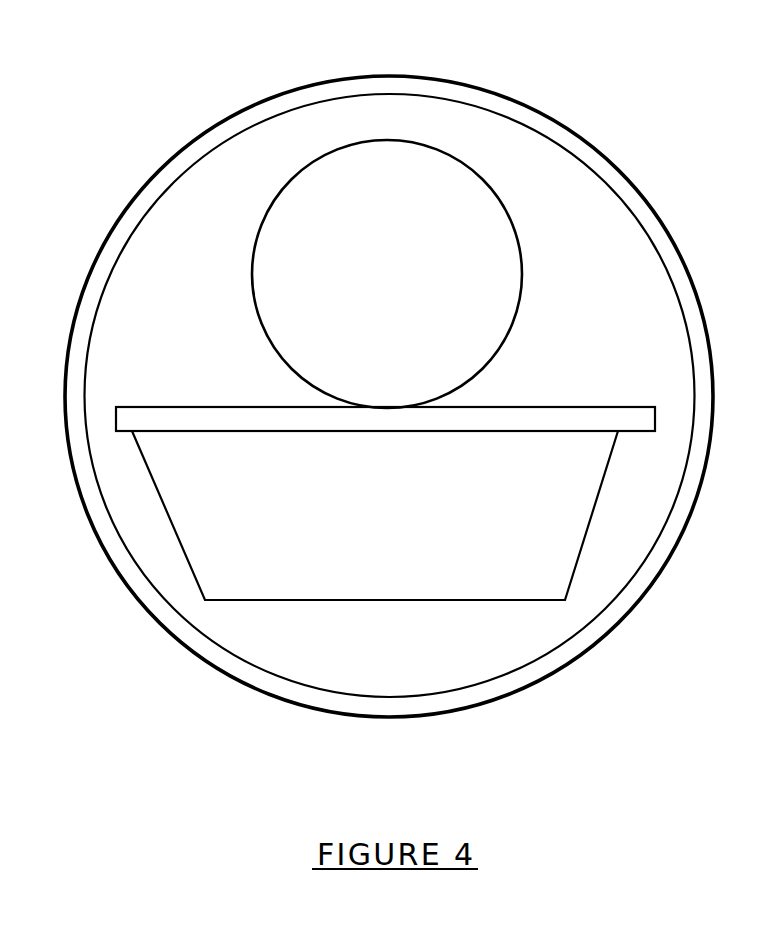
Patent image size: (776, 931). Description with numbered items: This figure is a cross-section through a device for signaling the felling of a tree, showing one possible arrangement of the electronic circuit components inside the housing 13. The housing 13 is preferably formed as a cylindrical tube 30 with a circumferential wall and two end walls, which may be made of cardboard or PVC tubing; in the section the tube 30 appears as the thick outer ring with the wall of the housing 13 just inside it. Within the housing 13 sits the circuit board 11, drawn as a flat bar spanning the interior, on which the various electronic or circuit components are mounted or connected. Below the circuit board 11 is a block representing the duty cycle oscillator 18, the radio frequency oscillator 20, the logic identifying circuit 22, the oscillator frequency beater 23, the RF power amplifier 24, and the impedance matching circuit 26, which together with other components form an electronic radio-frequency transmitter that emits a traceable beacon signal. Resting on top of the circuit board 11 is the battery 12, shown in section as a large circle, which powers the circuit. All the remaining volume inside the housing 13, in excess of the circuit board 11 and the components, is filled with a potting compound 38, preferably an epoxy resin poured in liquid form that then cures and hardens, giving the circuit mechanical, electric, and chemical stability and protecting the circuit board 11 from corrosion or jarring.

The cylindrical tube 30 is at (295, 88).
The housing 13 is at (482, 97).
The battery 12 is at (483, 185).
The potting compound 38 is at (590, 287).
The circuit board 11 is at (612, 407).
The duty cycle oscillator 18 is at (375, 515).
The radio frequency oscillator 20 is at (375, 515).
The logic identifying circuit 22 is at (375, 515).
The oscillator frequency beater 23 is at (375, 515).
The RF power amplifier 24 is at (375, 515).
The impedance matching circuit 26 is at (453, 517).